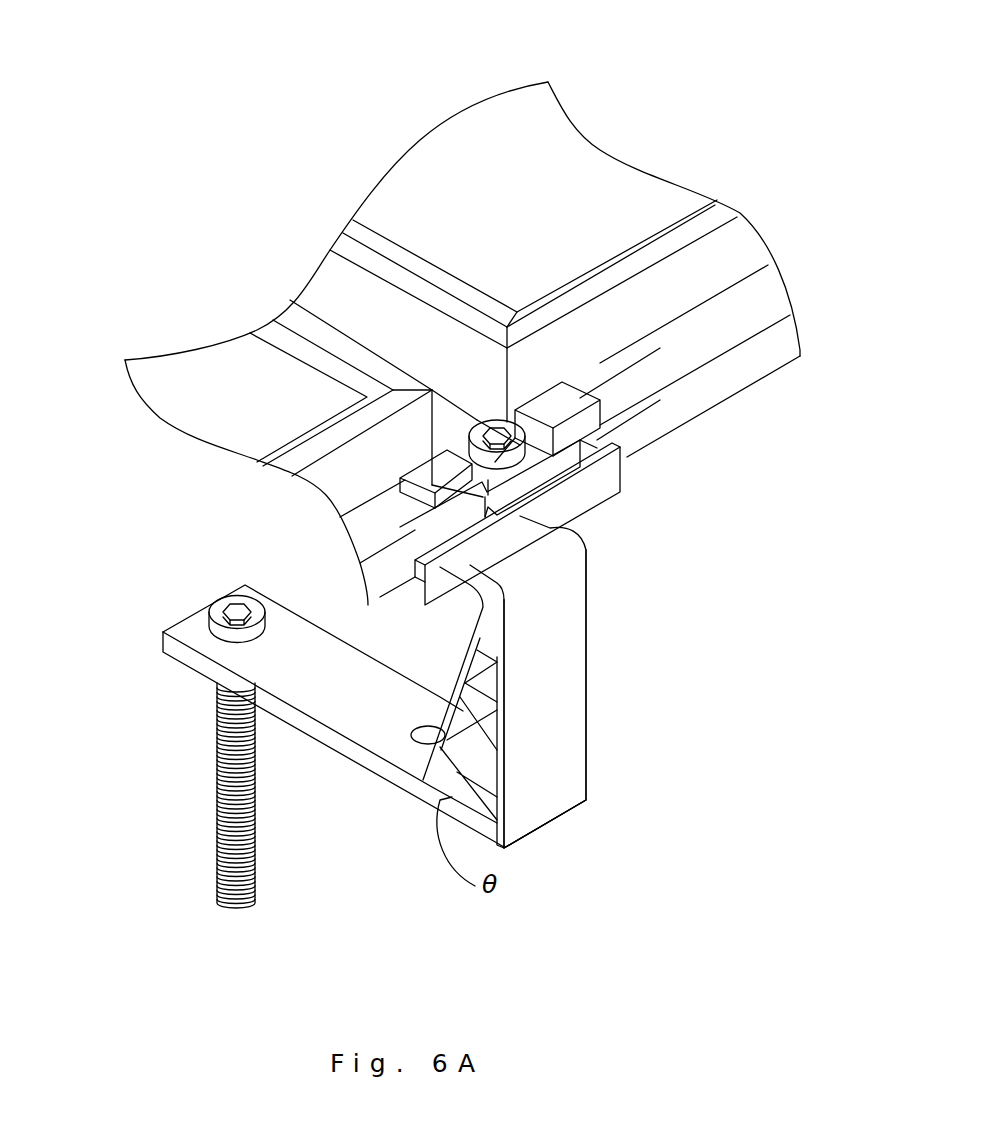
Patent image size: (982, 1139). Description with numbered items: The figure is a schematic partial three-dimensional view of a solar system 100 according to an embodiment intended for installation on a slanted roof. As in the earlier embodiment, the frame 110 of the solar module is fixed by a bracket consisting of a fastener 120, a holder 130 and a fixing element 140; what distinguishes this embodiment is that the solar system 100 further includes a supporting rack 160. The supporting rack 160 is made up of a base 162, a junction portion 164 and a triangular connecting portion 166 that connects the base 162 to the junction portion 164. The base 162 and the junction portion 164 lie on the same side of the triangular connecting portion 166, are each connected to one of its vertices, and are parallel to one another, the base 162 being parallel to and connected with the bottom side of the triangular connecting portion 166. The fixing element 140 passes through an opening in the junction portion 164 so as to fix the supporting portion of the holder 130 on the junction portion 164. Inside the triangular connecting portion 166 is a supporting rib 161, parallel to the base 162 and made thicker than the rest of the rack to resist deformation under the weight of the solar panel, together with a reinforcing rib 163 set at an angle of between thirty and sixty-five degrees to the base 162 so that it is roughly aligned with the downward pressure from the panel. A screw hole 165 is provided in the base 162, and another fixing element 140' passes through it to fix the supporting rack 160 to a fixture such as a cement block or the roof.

The solar system 100 is at (130, 160).
The frame 110 is at (330, 285).
The fastener 120 is at (556, 402).
The holder 130 is at (587, 500).
The fixing element 140 is at (477, 243).
The another fixing element 140' is at (186, 795).
The supporting rack 160 is at (605, 748).
The supporting rib 161 is at (530, 800).
The base 162 is at (287, 713).
The reinforcing rib 163 is at (455, 778).
The junction portion 164 is at (487, 588).
The screw hole 165 is at (212, 636).
The triangular connecting portion 166 is at (570, 693).